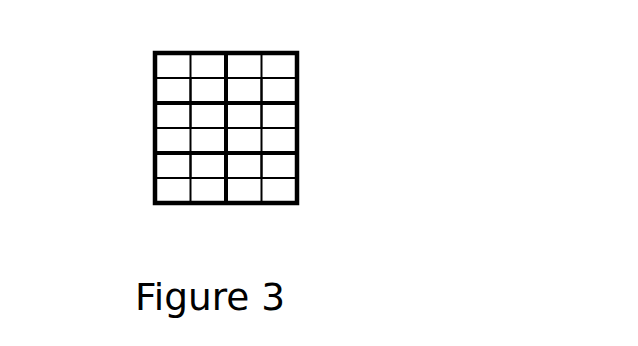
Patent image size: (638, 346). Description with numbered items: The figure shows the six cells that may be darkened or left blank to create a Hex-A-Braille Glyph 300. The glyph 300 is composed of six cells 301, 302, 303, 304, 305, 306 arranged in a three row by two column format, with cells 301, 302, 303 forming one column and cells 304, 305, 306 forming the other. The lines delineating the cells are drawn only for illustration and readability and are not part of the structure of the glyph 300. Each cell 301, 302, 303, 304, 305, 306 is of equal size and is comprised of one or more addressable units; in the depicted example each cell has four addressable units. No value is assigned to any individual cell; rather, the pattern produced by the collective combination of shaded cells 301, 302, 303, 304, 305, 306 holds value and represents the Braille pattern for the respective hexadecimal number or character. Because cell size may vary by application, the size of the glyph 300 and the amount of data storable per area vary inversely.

The Hex-A-Braille Glyph 300 is at (223, 234).
The cell 301 is at (173, 88).
The cell 302 is at (173, 120).
The cell 303 is at (173, 165).
The cell 304 is at (268, 88).
The cell 305 is at (283, 120).
The cell 306 is at (283, 166).